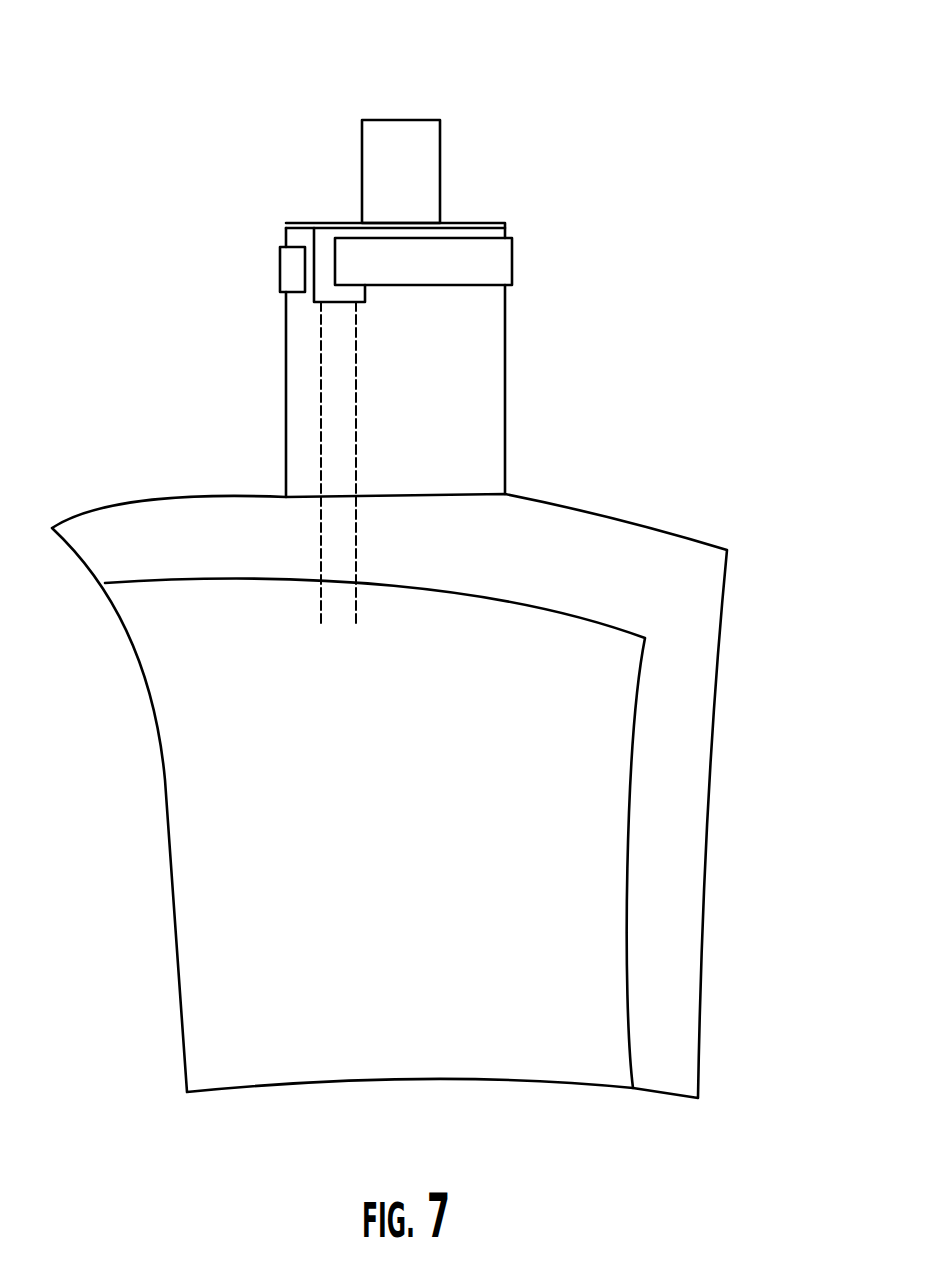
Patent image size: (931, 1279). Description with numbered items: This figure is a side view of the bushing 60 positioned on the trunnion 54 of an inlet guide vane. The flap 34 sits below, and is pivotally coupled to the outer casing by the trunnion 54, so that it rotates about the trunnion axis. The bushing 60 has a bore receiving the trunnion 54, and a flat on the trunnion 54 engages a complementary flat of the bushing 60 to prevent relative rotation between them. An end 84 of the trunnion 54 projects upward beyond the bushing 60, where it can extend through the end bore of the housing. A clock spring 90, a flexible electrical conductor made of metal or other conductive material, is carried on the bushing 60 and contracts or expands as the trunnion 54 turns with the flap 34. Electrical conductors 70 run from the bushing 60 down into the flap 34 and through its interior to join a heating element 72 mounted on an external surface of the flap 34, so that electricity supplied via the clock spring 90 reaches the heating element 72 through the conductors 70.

The flap 34 is at (673, 532).
The trunnion 54 is at (448, 175).
The bushing 60 is at (489, 222).
The electrical conductors 70 is at (321, 442).
The heating element 72 is at (598, 817).
The end of the trunnion 84 is at (392, 120).
The clock spring 90 is at (288, 270).